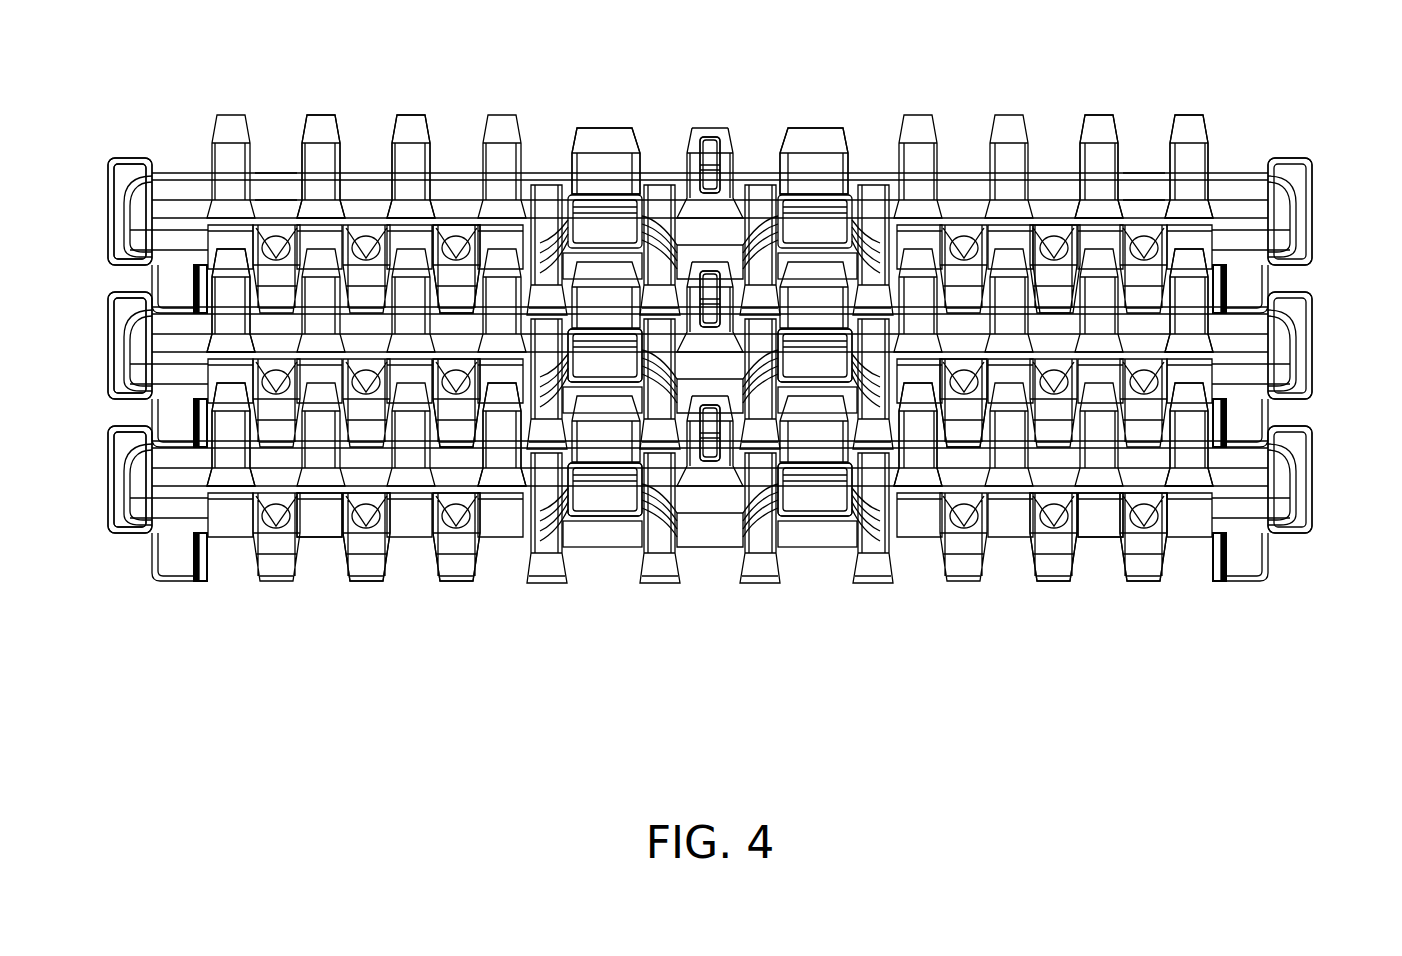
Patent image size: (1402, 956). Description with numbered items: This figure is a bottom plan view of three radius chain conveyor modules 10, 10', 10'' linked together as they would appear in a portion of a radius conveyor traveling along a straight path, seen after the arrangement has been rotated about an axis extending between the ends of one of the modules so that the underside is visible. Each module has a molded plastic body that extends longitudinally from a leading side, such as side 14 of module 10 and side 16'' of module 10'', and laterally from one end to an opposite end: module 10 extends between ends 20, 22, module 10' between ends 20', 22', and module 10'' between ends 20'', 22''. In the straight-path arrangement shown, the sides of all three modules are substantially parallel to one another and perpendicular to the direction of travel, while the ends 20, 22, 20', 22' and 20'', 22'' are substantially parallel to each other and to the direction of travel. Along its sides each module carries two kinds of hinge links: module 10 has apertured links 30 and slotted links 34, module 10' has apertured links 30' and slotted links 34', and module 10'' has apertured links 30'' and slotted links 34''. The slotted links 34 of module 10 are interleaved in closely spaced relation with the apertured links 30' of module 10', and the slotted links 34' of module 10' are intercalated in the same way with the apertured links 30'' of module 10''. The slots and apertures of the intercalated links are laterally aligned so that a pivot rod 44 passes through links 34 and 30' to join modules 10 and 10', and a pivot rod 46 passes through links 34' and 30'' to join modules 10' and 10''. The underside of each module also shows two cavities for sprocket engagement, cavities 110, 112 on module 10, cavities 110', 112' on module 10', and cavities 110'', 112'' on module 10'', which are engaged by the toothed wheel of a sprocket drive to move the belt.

The radius chain conveyor module 10 is at (100, 512).
The module 10' is at (92, 345).
The module 10'' is at (100, 181).
The side 14 is at (320, 540).
The side 16'' is at (710, 150).
The end 20 is at (95, 479).
The end 20' is at (92, 345).
The end 20'' is at (92, 211).
The end 22 is at (1315, 479).
The end 22' is at (1317, 345).
The end 22'' is at (1320, 211).
The apertured links 30 is at (755, 572).
The apertured links 30' is at (704, 469).
The apertured links 30'' is at (756, 206).
The slotted links 34 is at (708, 511).
The slotted links 34' is at (702, 319).
The slotted links 34'' is at (755, 138).
The pivot rod 44 is at (712, 420).
The pivot rod 46 is at (710, 280).
The cavity 110 is at (605, 523).
The cavity 110' is at (605, 336).
The cavity 110'' is at (606, 143).
The cavity 112 is at (815, 523).
The cavity 112' is at (815, 336).
The cavity 112'' is at (814, 157).